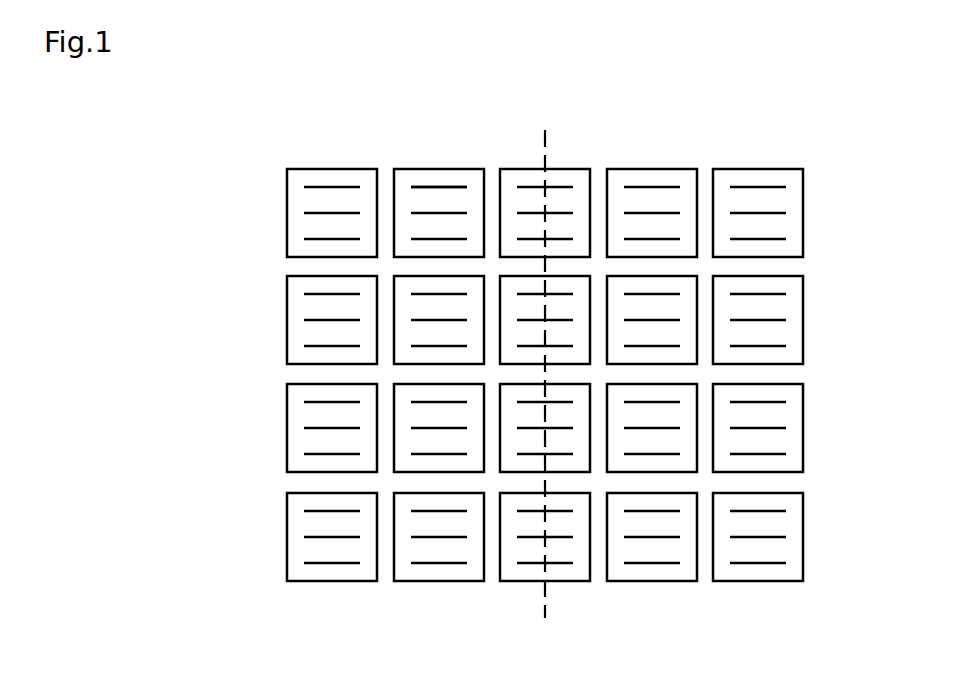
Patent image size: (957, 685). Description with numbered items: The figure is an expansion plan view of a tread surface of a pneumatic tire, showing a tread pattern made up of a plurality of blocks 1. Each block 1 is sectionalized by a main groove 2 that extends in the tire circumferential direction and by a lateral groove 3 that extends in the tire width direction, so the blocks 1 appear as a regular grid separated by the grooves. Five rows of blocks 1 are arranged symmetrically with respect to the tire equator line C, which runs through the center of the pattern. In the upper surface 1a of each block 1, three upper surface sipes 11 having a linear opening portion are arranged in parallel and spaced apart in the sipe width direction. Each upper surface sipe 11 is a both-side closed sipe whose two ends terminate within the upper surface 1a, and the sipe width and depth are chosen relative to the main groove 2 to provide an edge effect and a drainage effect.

The block 1 is at (330, 169).
The upper surface 1a is at (662, 183).
The upper surface sipe 11 is at (437, 187).
The main groove 2 is at (388, 578).
The lateral groove 3 is at (797, 266).
The tire equator line C is at (545, 353).